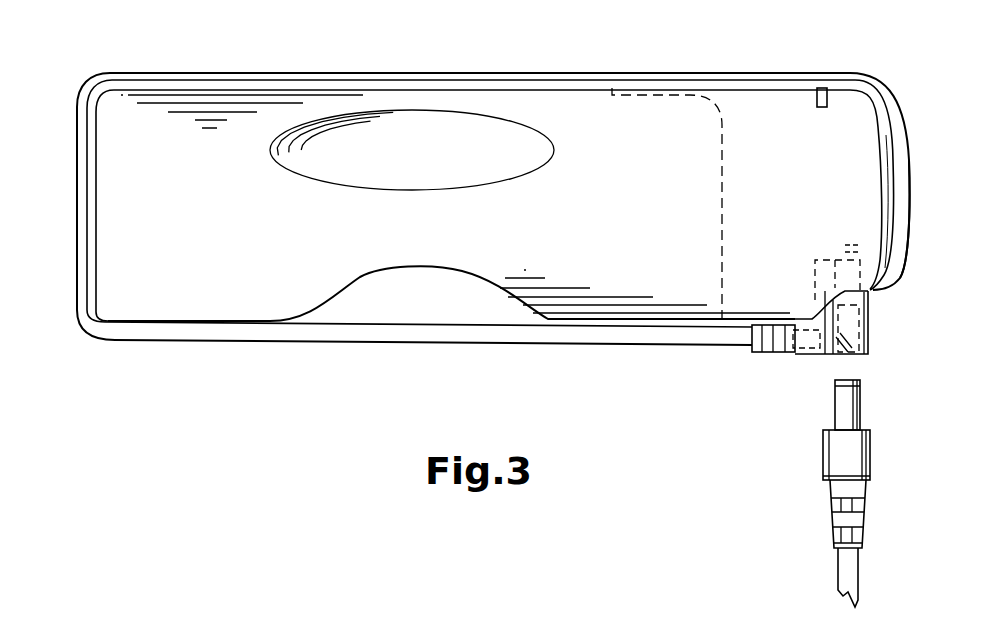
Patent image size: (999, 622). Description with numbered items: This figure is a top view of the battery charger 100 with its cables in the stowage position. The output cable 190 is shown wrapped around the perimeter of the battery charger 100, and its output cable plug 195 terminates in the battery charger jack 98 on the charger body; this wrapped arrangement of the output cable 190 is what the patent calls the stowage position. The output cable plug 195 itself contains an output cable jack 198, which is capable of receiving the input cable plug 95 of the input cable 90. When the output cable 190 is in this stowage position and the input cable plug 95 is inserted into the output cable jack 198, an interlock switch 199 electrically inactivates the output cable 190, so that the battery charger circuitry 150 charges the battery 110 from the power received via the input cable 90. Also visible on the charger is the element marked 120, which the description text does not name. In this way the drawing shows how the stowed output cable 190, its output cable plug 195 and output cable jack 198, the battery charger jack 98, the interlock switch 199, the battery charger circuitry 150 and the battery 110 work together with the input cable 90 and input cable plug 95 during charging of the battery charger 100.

The battery charger 100 is at (658, 184).
The battery 110 is at (413, 287).
The indicator 120 is at (822, 88).
The battery charger circuitry 150 is at (846, 166).
The output cable 190 is at (907, 177).
The output cable plug 195 is at (871, 318).
The output cable jack 198 is at (860, 357).
The interlock switch 199 is at (797, 362).
The battery charger jack 98 is at (840, 252).
The input cable plug 95 is at (870, 449).
The input cable 90 is at (858, 575).